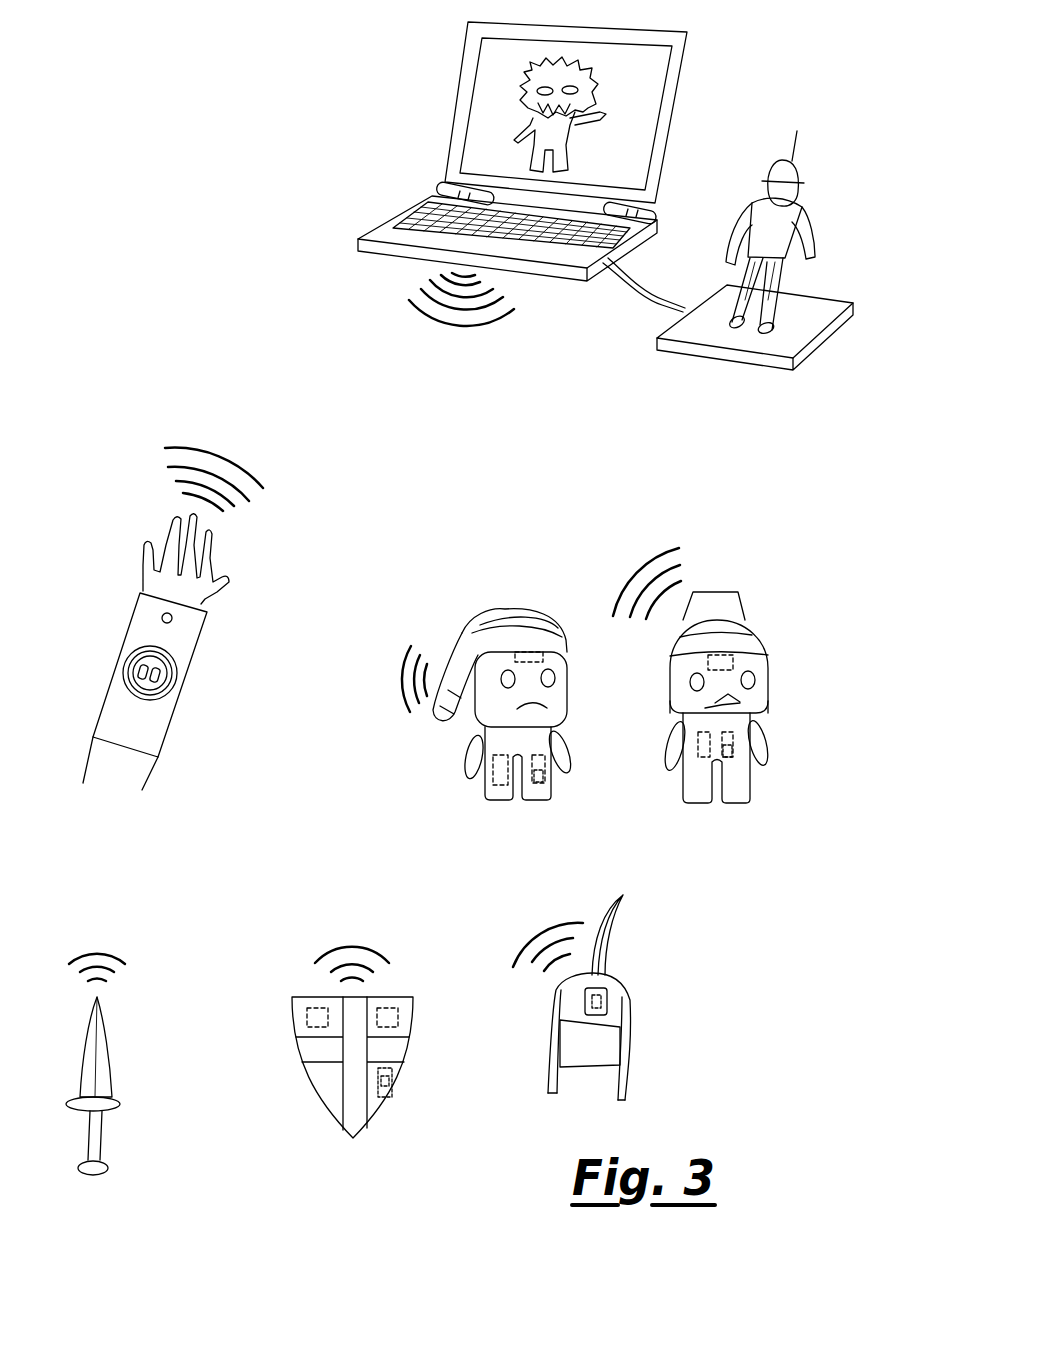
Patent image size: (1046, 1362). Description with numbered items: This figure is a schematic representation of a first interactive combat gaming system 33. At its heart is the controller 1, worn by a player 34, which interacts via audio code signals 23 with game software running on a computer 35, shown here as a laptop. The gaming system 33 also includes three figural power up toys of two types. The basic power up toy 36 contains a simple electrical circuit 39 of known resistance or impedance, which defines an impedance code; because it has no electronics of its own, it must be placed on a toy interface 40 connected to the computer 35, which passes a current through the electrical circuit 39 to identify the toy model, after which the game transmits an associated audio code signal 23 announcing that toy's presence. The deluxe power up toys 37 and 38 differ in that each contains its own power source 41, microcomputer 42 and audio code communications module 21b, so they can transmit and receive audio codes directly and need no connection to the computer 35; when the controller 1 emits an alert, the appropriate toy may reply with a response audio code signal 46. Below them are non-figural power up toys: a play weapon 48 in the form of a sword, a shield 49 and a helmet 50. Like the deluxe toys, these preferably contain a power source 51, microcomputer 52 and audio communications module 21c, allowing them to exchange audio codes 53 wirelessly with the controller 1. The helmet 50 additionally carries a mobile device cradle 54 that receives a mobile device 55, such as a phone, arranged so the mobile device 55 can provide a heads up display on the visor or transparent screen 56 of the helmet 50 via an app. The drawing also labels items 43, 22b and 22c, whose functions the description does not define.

The gaming system 33 is at (145, 225).
The computer 35 is at (684, 80).
The basic power up toy 36 is at (813, 213).
The electrical circuit 39 is at (783, 277).
The toy interface 40 is at (808, 347).
The wireless signal 43 is at (485, 323).
The audio code signals 23 is at (257, 482).
The player 34 is at (127, 772).
The controller 1 is at (150, 675).
The response audio code signal 46 is at (398, 660).
The deluxe power up toy 37 is at (492, 613).
The deluxe power up toy 38 is at (753, 635).
The power source 41 is at (540, 656).
The second detector 22b is at (534, 748).
The microcomputer 42 is at (493, 773).
The audio code communications module 21b is at (540, 778).
The audio codes 53 is at (92, 955).
The play weapon 48 is at (112, 1073).
The shield 49 is at (410, 1052).
The microcomputer 52 is at (313, 1008).
The power source 51 is at (395, 1017).
The audio communications module 21c is at (390, 1078).
The second detector 22c is at (379, 1090).
The helmet 50 is at (633, 1082).
The visor or transparent screen 56 is at (590, 1043).
The mobile device cradle 54 is at (605, 993).
The mobile device 55 is at (603, 1003).